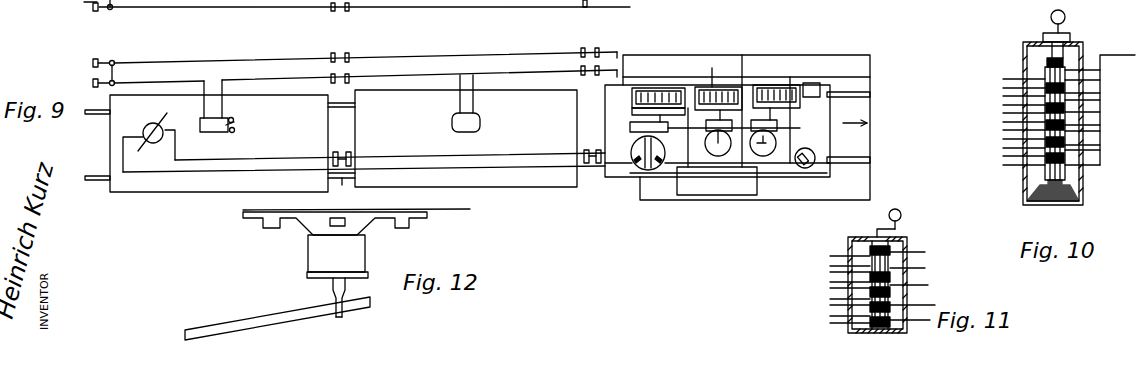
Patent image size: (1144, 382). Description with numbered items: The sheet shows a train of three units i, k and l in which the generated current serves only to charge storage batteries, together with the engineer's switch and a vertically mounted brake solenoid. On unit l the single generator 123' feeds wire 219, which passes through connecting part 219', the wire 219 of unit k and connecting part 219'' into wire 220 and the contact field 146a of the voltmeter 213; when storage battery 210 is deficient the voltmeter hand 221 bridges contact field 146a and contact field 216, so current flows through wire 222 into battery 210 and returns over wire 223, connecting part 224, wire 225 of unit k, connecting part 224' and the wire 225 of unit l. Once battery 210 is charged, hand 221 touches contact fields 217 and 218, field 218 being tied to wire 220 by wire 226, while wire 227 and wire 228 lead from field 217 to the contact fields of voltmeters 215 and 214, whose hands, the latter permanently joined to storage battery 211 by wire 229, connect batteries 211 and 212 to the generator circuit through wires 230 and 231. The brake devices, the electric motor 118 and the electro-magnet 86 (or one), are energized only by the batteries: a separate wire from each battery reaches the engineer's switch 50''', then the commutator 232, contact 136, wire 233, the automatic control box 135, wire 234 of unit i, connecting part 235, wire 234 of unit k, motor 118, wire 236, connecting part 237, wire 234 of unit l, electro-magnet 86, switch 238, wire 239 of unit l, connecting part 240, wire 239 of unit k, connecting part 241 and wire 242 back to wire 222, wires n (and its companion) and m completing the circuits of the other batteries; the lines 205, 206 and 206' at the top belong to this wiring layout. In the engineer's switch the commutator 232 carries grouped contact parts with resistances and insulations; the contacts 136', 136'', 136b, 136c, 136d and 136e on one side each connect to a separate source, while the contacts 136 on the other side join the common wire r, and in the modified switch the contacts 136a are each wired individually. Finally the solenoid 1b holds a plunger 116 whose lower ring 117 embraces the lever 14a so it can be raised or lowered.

In FIG. 9, the conductor 205 is at (70, 6).
In FIG. 9, the conductor 206 is at (361, 15).
In FIG. 9, the contact pair 206' is at (354, 15).
In FIG. 9, the switch 238 is at (126, 55).
In FIG. 9, the wire 239 is at (222, 62).
In FIG. 9, the train unit l is at (182, 100).
In FIG. 9, the connecting part 237 is at (338, 77).
In FIG. 9, the connecting part 240 is at (356, 46).
In FIG. 9, the train unit k is at (418, 102).
In FIG. 9, the wire 236 is at (140, 65).
In FIG. 9, the wire 234 is at (244, 83).
In FIG. 9, the generator 123' is at (206, 143).
In FIG. 9, the electro-magnet 86 is at (236, 127).
In FIG. 9, the wire 219 is at (390, 147).
In FIG. 9, the wire 225 is at (214, 170).
In FIG. 9, the connecting part 219' is at (341, 140).
In FIG. 9, the connecting part 224' is at (343, 192).
In FIG. 9, the electric motor 118 is at (482, 124).
In FIG. 9, the connecting part 219'' is at (564, 145).
In FIG. 9, the connecting part 235 is at (583, 50).
In FIG. 9, the connecting part 241 is at (590, 43).
In FIG. 9, the wire 242 is at (611, 48).
In FIG. 9, the wire 223 is at (636, 55).
In FIG. 9, the train unit i is at (640, 88).
In FIG. 9, the storage battery 210 is at (664, 92).
In FIG. 9, the storage battery 211 is at (718, 92).
In FIG. 9, the storage battery 212 is at (774, 92).
In FIG. 9, the wire 229 is at (711, 71).
In FIG. 9, the wire 230 is at (745, 78).
In FIG. 9, the wire 231 is at (808, 83).
In FIG. 9, the box 135 is at (848, 120).
In FIG. 9, the wire 233 is at (851, 112).
In FIG. 9, the wire 222 is at (656, 121).
In FIG. 9, the wire n is at (737, 114).
In FIG. 9, the contact m is at (740, 126).
In FIG. 9, the contact field 218 is at (640, 175).
In FIG. 9, the contact field 217 is at (632, 140).
In FIG. 9, the wire 220 is at (620, 146).
In FIG. 9, the wire 226 is at (615, 170).
In FIG. 9, the connecting part 224 is at (687, 190).
In FIG. 9, the contact field 146a is at (640, 170).
In FIG. 9, the voltmeter hand 221 is at (654, 172).
In FIG. 9, the voltmeter 213 is at (660, 175).
In FIG. 9, the contact field 216 is at (662, 170).
In FIG. 9, the voltmeter 214 is at (718, 160).
In FIG. 9, the voltmeter 215 is at (766, 160).
In FIG. 9, the wire 227 is at (750, 195).
In FIG. 9, the wire 228 is at (747, 136).
In FIG. 9, the engineer's switch 50''' is at (723, 141).
In FIG. 10, the commutator 232 is at (1052, 72).
In FIG. 10, the contact 136' is at (1006, 62).
In FIG. 11, the contact 136' is at (862, 248).
In FIG. 10, the contact 136'' is at (993, 90).
In FIG. 11, the contact 136'' is at (861, 266).
In FIG. 10, the contact 136b is at (1003, 110).
In FIG. 11, the contact 136b is at (860, 283).
In FIG. 10, the contact 136c is at (1003, 128).
In FIG. 11, the contact 136c is at (863, 300).
In FIG. 10, the contact 136d is at (1003, 145).
In FIG. 11, the contact 136d is at (861, 317).
In FIG. 10, the contact 136e is at (1003, 163).
In FIG. 10, the contact 136 is at (1109, 80).
In FIG. 10, the wire r is at (1100, 102).
In FIG. 11, the contact 136a is at (905, 245).
In FIG. 12, the electro-magnet 1b is at (322, 250).
In FIG. 12, the plunger 116 is at (330, 292).
In FIG. 12, the ring 117 is at (346, 312).
In FIG. 12, the lever 14a is at (277, 323).